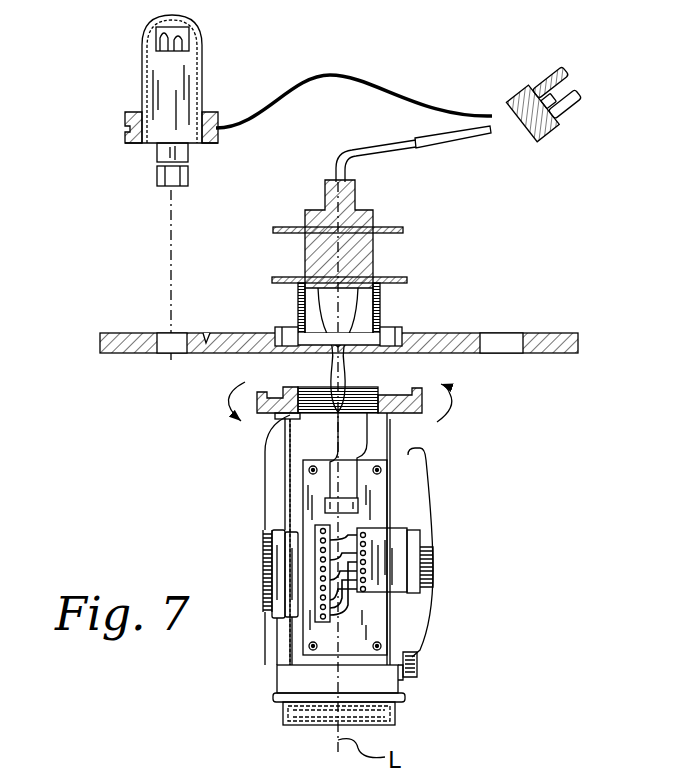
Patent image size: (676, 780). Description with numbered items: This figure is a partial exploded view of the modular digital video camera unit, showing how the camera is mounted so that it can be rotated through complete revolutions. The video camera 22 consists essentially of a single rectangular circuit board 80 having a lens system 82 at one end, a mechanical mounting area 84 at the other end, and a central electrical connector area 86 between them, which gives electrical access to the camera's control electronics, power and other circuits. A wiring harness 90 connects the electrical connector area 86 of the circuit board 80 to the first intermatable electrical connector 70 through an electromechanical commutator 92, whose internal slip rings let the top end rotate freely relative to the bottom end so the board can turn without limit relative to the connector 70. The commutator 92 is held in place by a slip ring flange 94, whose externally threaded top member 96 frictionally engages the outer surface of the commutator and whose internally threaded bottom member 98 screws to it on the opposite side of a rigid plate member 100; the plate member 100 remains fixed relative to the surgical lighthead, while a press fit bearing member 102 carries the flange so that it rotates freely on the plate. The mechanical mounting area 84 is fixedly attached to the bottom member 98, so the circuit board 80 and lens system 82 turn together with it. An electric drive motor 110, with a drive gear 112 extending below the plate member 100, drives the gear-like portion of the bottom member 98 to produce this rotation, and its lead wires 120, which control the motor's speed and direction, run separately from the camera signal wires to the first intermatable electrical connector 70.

The electric drive motor 110 is at (144, 66).
The drive gear 112 is at (148, 177).
The lead wires 120 is at (286, 90).
The first intermatable electrical connector 70 is at (560, 152).
The electromechanical commutator 92 is at (320, 212).
The slip ring flange 94 is at (404, 279).
The top member 96 is at (298, 311).
The plate member 100 is at (560, 333).
The press fit bearing member 102 is at (276, 331).
The bottom member 98 is at (424, 402).
The wiring harness 90 is at (260, 473).
The mechanical mounting area 84 is at (414, 437).
The video camera 22 is at (357, 640).
The circuit board 80 is at (357, 523).
The electrical connector area 86 is at (256, 565).
The lens system 82 is at (406, 712).